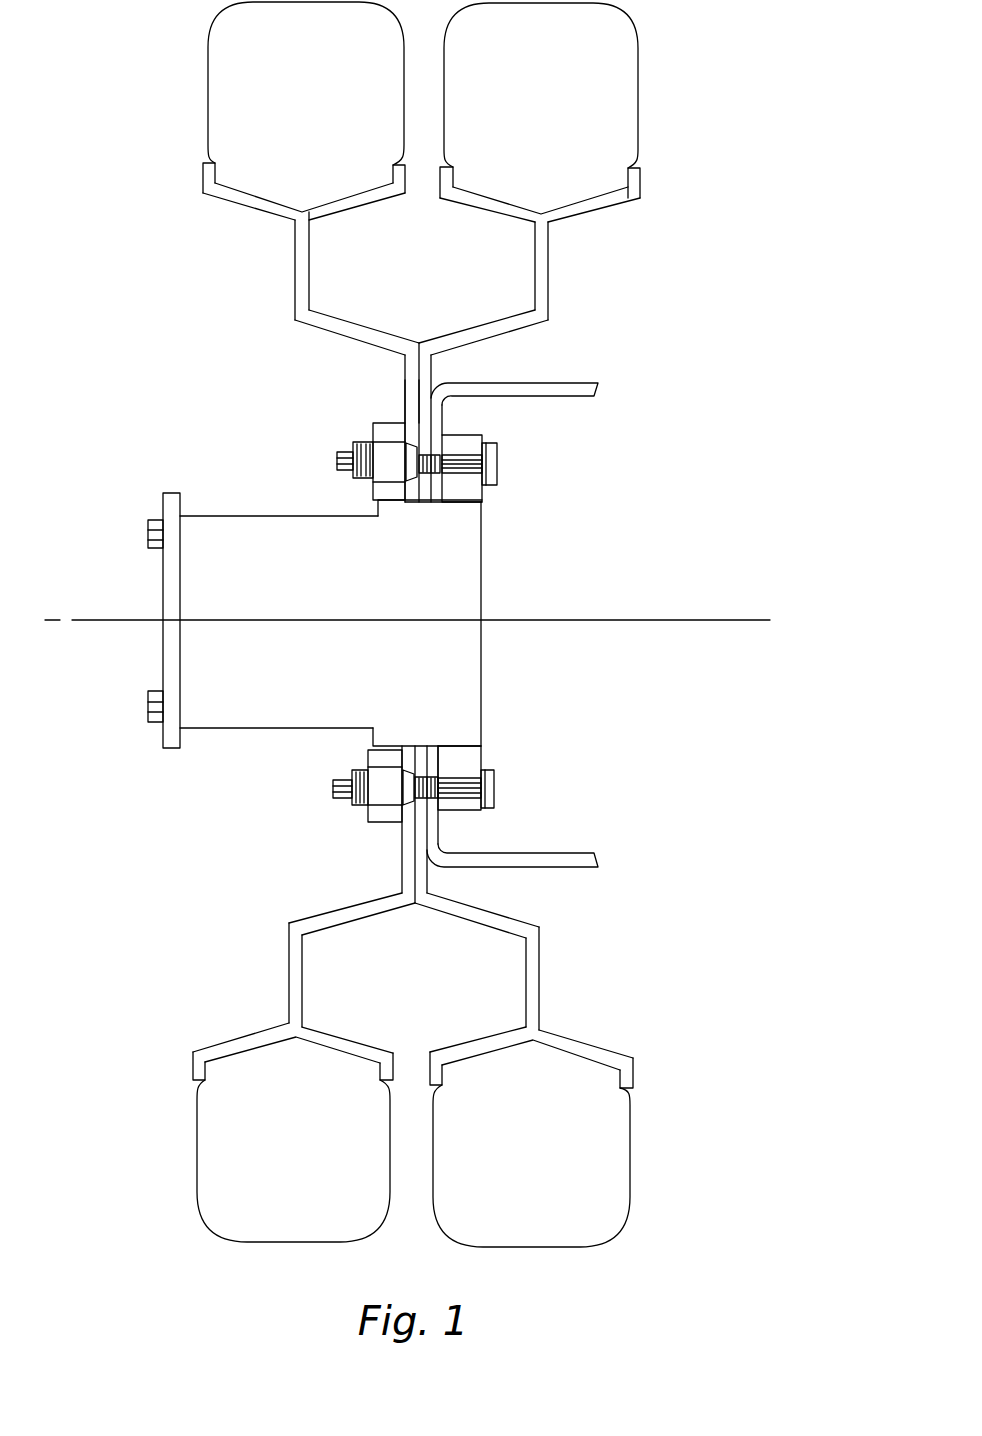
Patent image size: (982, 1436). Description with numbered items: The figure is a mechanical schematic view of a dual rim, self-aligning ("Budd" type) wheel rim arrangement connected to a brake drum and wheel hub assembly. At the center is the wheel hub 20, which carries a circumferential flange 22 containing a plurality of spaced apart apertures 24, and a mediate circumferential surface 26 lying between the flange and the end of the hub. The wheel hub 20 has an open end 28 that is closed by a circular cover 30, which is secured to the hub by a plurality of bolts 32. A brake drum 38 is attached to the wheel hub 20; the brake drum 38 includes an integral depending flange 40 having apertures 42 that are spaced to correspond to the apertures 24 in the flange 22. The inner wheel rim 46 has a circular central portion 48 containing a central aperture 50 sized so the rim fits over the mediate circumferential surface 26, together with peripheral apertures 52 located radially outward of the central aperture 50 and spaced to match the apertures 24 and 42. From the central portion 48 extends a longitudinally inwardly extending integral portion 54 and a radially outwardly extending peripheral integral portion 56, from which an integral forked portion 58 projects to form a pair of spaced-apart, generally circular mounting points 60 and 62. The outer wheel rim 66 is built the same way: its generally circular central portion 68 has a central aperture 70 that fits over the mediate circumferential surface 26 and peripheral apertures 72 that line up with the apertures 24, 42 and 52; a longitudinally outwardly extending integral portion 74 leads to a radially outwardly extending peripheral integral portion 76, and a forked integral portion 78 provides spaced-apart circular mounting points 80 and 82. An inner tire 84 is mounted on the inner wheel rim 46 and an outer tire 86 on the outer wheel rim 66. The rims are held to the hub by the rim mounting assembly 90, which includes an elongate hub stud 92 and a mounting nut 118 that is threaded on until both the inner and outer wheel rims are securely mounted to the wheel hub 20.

The wheel hub 20 is at (407, 624).
The circumferential flange 22 is at (472, 752).
The apertures 24 is at (462, 455).
The mediate circumferential surface 26 is at (440, 745).
The open end 28 is at (174, 642).
The circular cover 30 is at (170, 560).
The bolts 32 is at (150, 533).
The brake drum 38 is at (598, 384).
The depending flange 40 is at (404, 396).
The apertures 42 is at (442, 478).
The inner wheel rim 46 is at (560, 616).
The central portion 48 is at (433, 366).
The central aperture 50 is at (427, 503).
The peripheral apertures 52 is at (421, 455).
The longitudinally inwardly extending integral portion 54 is at (485, 333).
The radially outwardly extending peripheral integral portion 56 is at (542, 284).
The forked portion 58 is at (541, 217).
The mounting point 60 is at (455, 168).
The mounting point 62 is at (636, 168).
The outer wheel rim 66 is at (267, 607).
The central portion 68 is at (342, 623).
The central aperture 70 is at (413, 503).
The peripheral apertures 72 is at (413, 428).
The longitudinally outwardly extending integral portion 74 is at (358, 333).
The radially outwardly extending peripheral integral portion 76 is at (305, 245).
The forked integral portion 78 is at (301, 214).
The mounting point 80 is at (211, 165).
The mounting point 82 is at (394, 167).
The inner tire 84 is at (535, 83).
The outer tire 86 is at (290, 80).
The rim mounting assembly 90 is at (314, 440).
The hub stud 92 is at (498, 459).
The mounting nut 118 is at (390, 468).